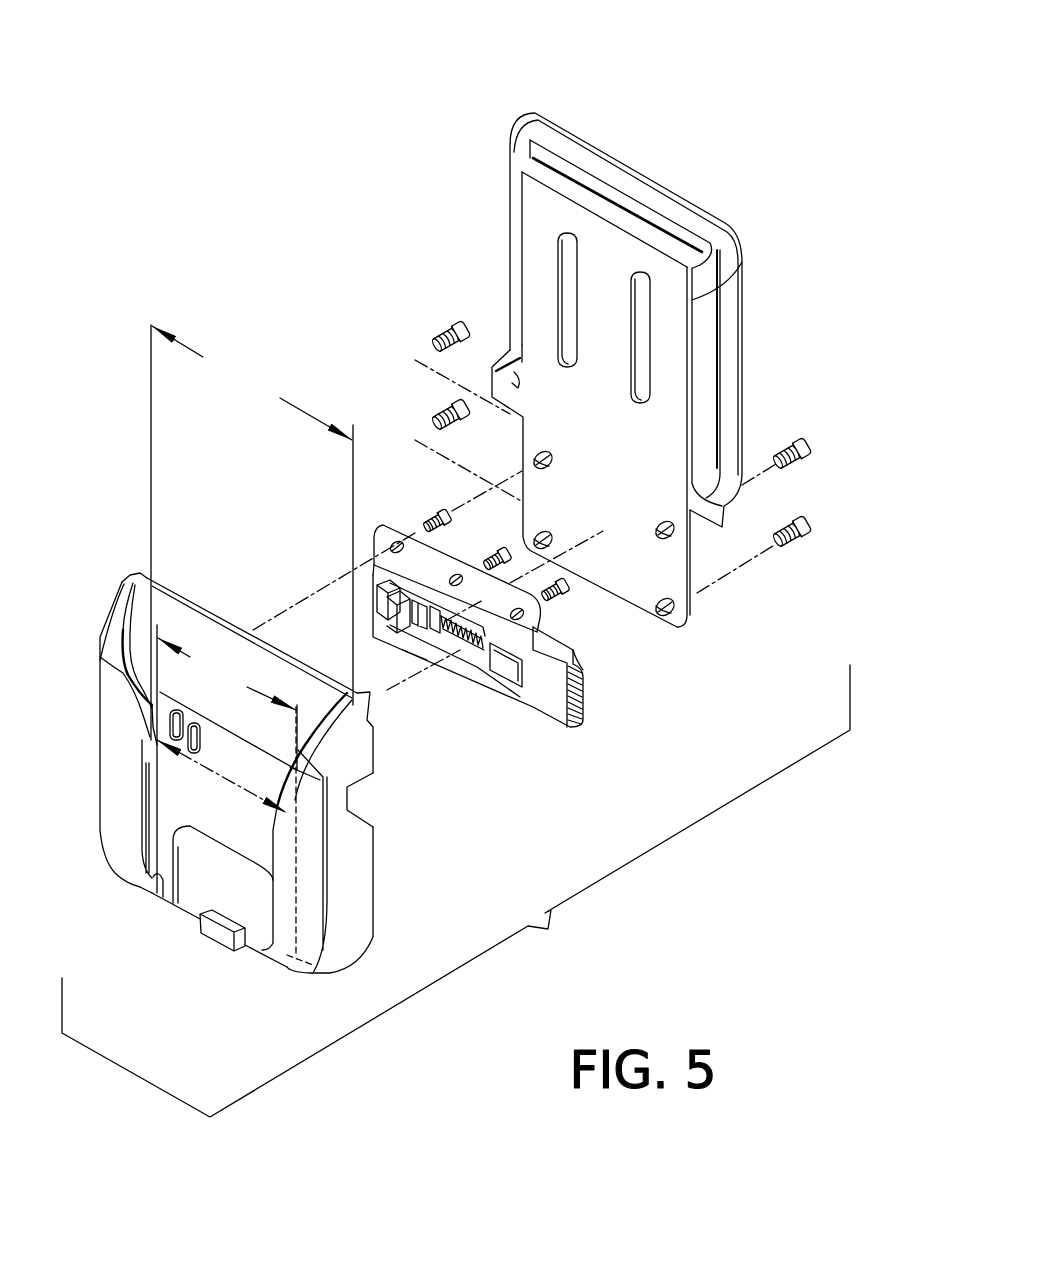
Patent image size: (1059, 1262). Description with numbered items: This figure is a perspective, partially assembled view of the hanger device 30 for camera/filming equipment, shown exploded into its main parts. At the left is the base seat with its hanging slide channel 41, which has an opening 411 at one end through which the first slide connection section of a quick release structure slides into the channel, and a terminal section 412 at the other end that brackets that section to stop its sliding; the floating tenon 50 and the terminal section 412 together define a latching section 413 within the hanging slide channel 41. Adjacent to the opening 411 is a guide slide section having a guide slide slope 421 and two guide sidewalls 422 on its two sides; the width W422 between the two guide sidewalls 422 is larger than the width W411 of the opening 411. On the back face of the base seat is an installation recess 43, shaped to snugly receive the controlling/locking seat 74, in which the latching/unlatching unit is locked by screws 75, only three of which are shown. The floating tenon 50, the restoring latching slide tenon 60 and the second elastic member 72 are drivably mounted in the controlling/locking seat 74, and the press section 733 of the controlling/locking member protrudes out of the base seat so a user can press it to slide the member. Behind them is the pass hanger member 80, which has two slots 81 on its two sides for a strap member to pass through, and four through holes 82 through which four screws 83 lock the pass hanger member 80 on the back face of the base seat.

The hanger device 30 is at (456, 891).
The hanging slide channel 41 is at (261, 675).
The installation recess 43 is at (374, 800).
The floating tenon 50 is at (373, 605).
The restoring latching slide tenon 60 is at (405, 643).
The second elastic member 72 is at (465, 666).
The controlling/locking seat 74 is at (511, 661).
The screws 75 is at (426, 520).
The pass hanger member 80 is at (588, 324).
The slots 81 is at (523, 207).
The through holes 82 is at (553, 459).
The screws 83 is at (440, 330).
The opening 411 is at (208, 772).
The terminal section 412 is at (214, 953).
The latching section 413 is at (161, 897).
The guide slide slope 421 is at (198, 630).
The guide sidewalls 422 is at (142, 601).
The press section 733 is at (554, 730).
The width of the opening W411 is at (227, 697).
The width between the two guide sidewalls W422 is at (252, 532).